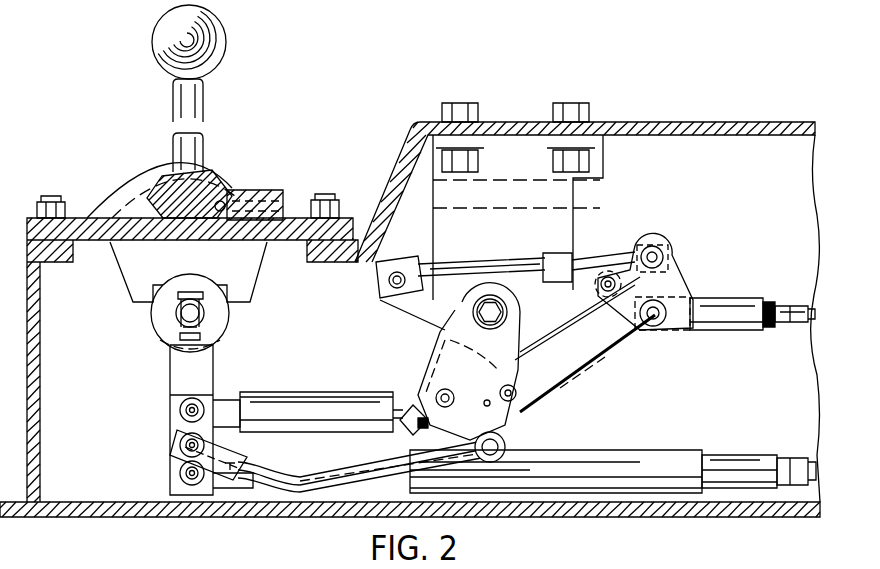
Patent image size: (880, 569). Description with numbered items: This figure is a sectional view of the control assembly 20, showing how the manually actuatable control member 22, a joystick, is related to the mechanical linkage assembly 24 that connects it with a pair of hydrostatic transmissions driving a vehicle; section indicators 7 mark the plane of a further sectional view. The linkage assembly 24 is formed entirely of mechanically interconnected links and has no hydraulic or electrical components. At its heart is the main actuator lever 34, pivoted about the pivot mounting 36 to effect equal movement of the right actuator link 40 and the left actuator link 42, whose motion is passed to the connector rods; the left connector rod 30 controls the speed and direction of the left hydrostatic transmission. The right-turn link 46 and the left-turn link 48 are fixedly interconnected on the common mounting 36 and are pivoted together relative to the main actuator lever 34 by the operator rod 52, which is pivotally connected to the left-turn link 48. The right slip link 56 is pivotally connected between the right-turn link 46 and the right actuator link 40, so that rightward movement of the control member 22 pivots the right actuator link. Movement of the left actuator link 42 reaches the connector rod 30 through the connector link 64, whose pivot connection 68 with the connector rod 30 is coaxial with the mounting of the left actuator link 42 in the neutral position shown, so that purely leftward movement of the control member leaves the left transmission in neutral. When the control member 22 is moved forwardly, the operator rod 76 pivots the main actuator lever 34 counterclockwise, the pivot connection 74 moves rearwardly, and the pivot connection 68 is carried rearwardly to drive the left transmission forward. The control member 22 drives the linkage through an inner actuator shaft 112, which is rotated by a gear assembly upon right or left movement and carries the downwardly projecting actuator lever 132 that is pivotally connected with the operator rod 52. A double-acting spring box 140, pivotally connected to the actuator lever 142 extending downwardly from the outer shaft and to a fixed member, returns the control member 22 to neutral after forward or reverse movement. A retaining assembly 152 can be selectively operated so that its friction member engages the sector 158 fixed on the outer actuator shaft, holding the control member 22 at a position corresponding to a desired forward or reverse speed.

The section line 7- 7 is at (205, 11).
The control assembly 20 is at (764, 77).
The control member 22 is at (207, 100).
The mechanical linkage assembly 24 is at (725, 208).
The left connector rod 30 is at (797, 288).
The main actuator lever 34 is at (524, 290).
The pivot mounting 36 is at (485, 298).
The right actuator link 40 is at (638, 244).
The left actuator link 42 is at (680, 278).
The right-turn link 46 is at (440, 360).
The left-turn link 48 is at (410, 302).
The operator rod 52 is at (322, 477).
The right slip link 56 is at (565, 308).
The connector link 64 is at (610, 365).
The pivot connection 68 is at (660, 327).
The pivot connection 74 is at (516, 398).
The operator rod 76 is at (330, 392).
The inner actuator shaft 112 is at (177, 313).
The actuator lever 132 is at (172, 438).
The double-acting spring box 140 is at (645, 452).
The actuator lever 142 is at (175, 472).
The retaining assembly 152 is at (221, 177).
The sector 158 is at (135, 283).